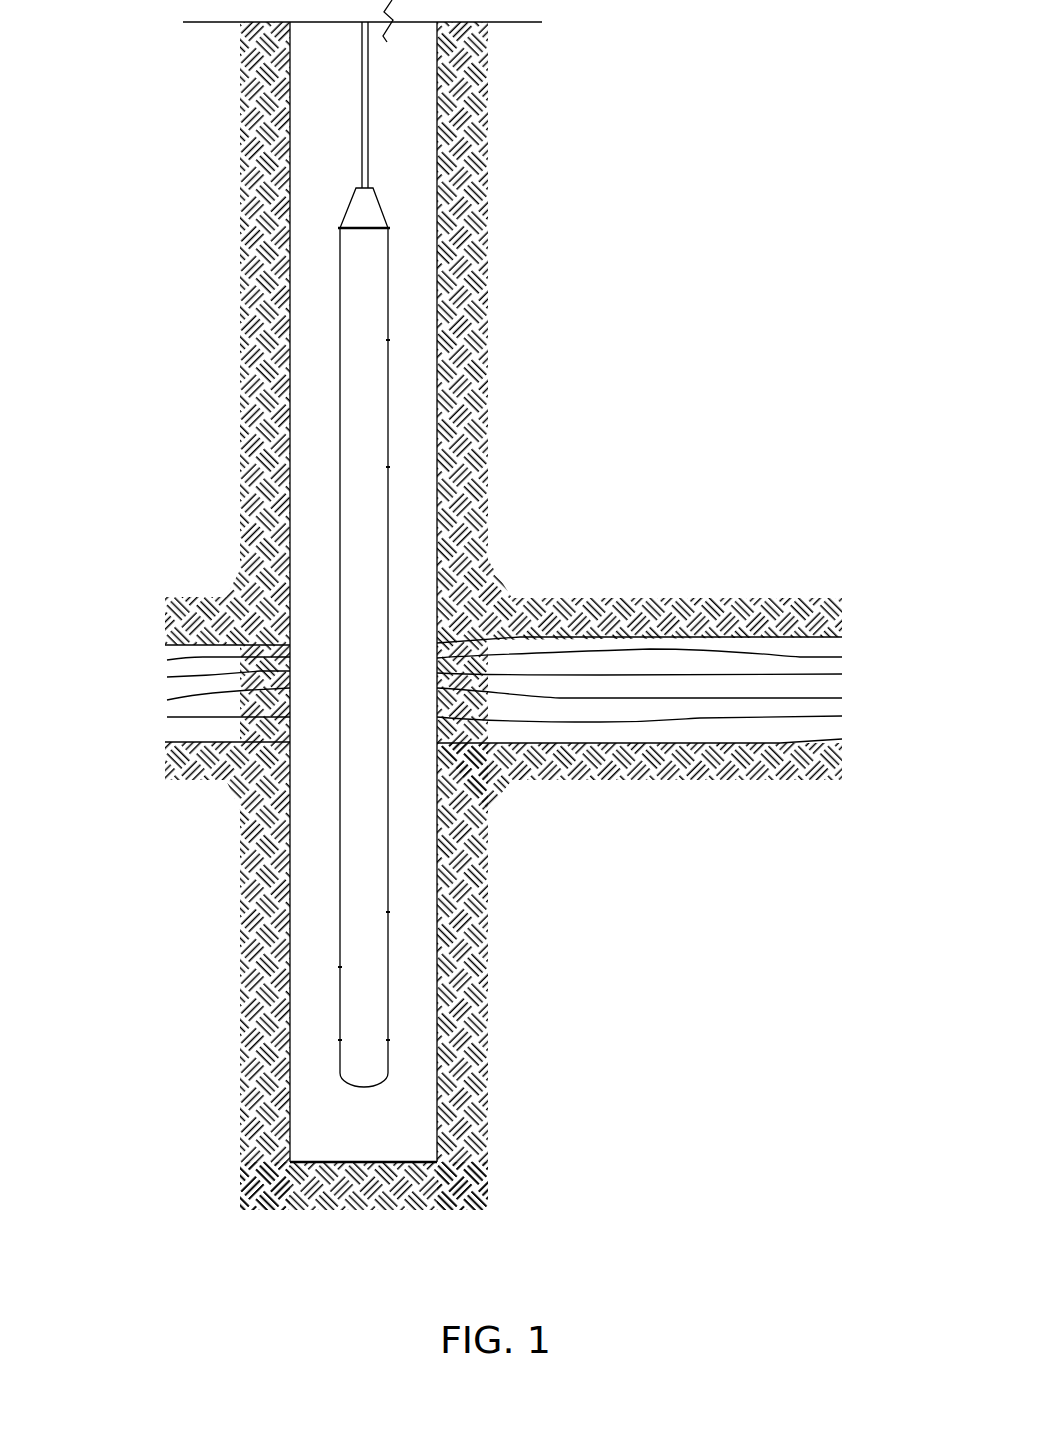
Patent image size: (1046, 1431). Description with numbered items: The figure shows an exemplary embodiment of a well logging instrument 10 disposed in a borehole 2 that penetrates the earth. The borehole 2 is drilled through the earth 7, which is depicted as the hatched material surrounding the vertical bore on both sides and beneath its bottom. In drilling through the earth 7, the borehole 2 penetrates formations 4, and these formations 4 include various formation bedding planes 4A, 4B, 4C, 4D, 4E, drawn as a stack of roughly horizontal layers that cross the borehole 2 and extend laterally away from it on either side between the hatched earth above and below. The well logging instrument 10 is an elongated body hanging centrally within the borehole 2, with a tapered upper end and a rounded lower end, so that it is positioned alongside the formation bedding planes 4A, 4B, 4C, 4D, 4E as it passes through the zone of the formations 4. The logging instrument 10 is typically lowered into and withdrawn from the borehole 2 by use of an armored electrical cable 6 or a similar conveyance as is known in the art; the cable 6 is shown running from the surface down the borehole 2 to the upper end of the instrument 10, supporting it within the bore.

The borehole 2 is at (417, 98).
The formations 4 is at (160, 693).
The formation bedding plane 4A is at (835, 643).
The formation bedding plane 4B is at (845, 660).
The formation bedding plane 4C is at (838, 682).
The formation bedding plane 4D is at (835, 703).
The formation bedding plane 4E is at (835, 727).
The armored electrical cable 6 is at (362, 108).
The earth 7 is at (467, 988).
The well logging instrument 10 is at (402, 311).